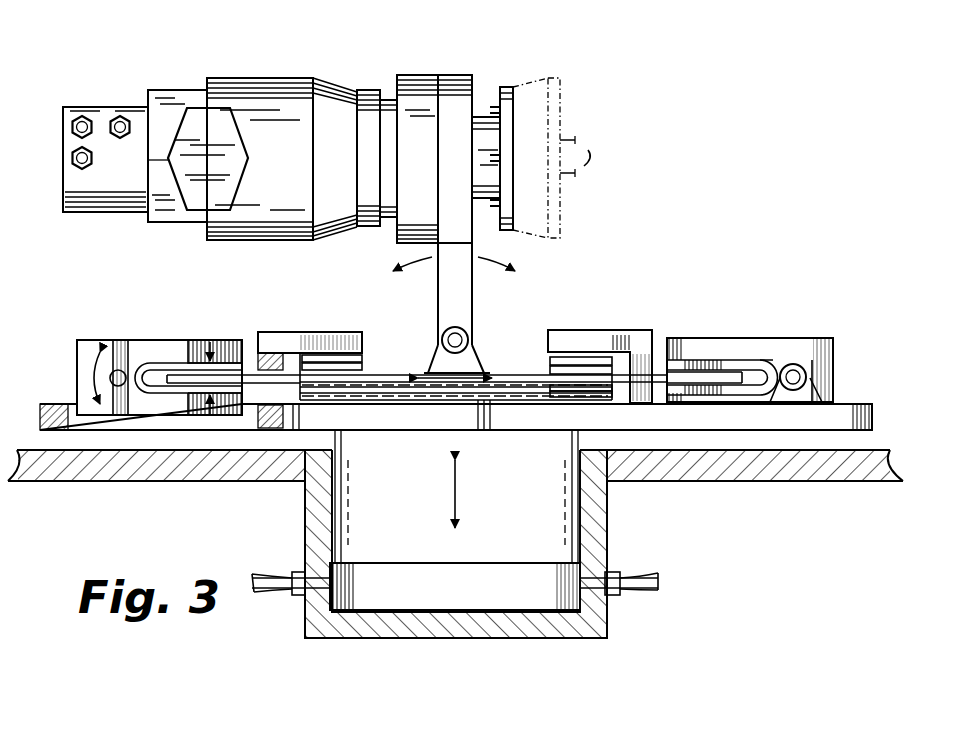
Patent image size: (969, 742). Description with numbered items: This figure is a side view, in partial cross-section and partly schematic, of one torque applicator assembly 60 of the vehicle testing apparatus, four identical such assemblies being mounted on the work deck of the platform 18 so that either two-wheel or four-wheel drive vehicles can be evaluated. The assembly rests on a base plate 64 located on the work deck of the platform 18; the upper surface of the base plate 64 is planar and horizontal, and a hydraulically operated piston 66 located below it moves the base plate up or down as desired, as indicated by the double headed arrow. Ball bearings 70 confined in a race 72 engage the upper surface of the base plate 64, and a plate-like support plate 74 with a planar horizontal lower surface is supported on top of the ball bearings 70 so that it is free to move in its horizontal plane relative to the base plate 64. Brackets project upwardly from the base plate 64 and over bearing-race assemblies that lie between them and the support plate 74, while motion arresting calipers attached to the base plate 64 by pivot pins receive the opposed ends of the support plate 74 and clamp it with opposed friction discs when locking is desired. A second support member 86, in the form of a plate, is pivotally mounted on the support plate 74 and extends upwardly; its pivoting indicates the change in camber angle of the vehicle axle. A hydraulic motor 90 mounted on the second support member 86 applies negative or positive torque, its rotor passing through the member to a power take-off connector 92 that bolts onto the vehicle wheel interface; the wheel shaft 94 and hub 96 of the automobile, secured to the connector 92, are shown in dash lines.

The platform 18 is at (773, 475).
The torque applicator assembly 60 is at (702, 332).
The base plate 64 is at (855, 404).
The hydraulically operated piston 66 is at (345, 498).
The ball bearings 70 is at (437, 400).
The race 72 is at (502, 393).
The support plate 74 is at (250, 375).
The second support member 86 is at (450, 92).
The hydraulic motor 90 is at (283, 88).
The power take-off interface adaptor or connector 92 is at (500, 90).
The wheel shaft 94 is at (563, 140).
The hub 96 is at (563, 222).